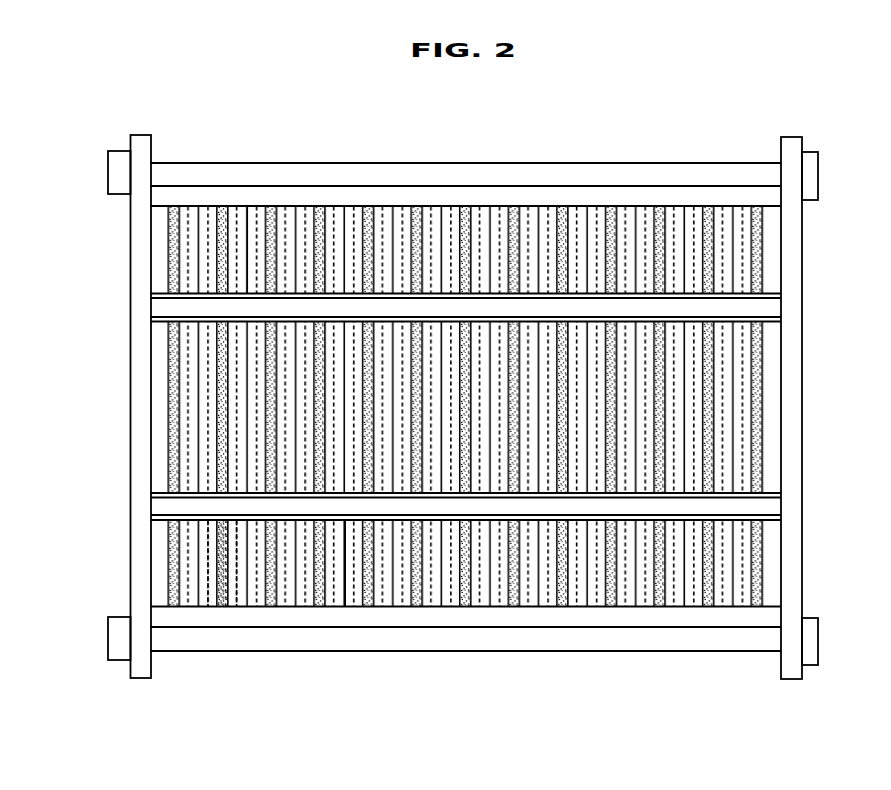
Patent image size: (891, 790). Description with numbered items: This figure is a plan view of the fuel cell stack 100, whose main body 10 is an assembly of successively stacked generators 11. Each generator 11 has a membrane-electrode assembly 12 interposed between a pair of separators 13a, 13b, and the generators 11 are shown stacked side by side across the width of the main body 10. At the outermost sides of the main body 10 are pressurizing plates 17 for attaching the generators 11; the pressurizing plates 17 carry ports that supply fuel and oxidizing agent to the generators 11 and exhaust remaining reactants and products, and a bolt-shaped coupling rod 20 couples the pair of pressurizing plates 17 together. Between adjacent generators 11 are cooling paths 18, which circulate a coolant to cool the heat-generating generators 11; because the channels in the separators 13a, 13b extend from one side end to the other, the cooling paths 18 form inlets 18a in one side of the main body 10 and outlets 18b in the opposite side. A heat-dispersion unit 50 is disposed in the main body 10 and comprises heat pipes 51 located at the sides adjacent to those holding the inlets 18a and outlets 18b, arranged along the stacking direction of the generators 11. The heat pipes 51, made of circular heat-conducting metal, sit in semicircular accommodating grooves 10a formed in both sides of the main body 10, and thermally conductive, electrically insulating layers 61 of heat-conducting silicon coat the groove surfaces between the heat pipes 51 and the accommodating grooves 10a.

The fuel cell stack 100 is at (473, 108).
The main body 10 is at (116, 433).
The accommodating groove 10a is at (161, 321).
The generator 11 is at (290, 703).
The membrane-electrode assembly 12 is at (219, 607).
The separator 13a is at (207, 607).
The separator 13b is at (231, 607).
The pressurizing plate 17 is at (130, 377).
The cooling path 18 is at (276, 205).
The inlet 18a is at (345, 621).
The outlet 18b is at (244, 192).
The coupling rod 20 is at (627, 162).
The heat-dispersion unit 50 is at (790, 308).
The heat pipe 51 is at (809, 152).
The insulating layer 61 is at (161, 293).